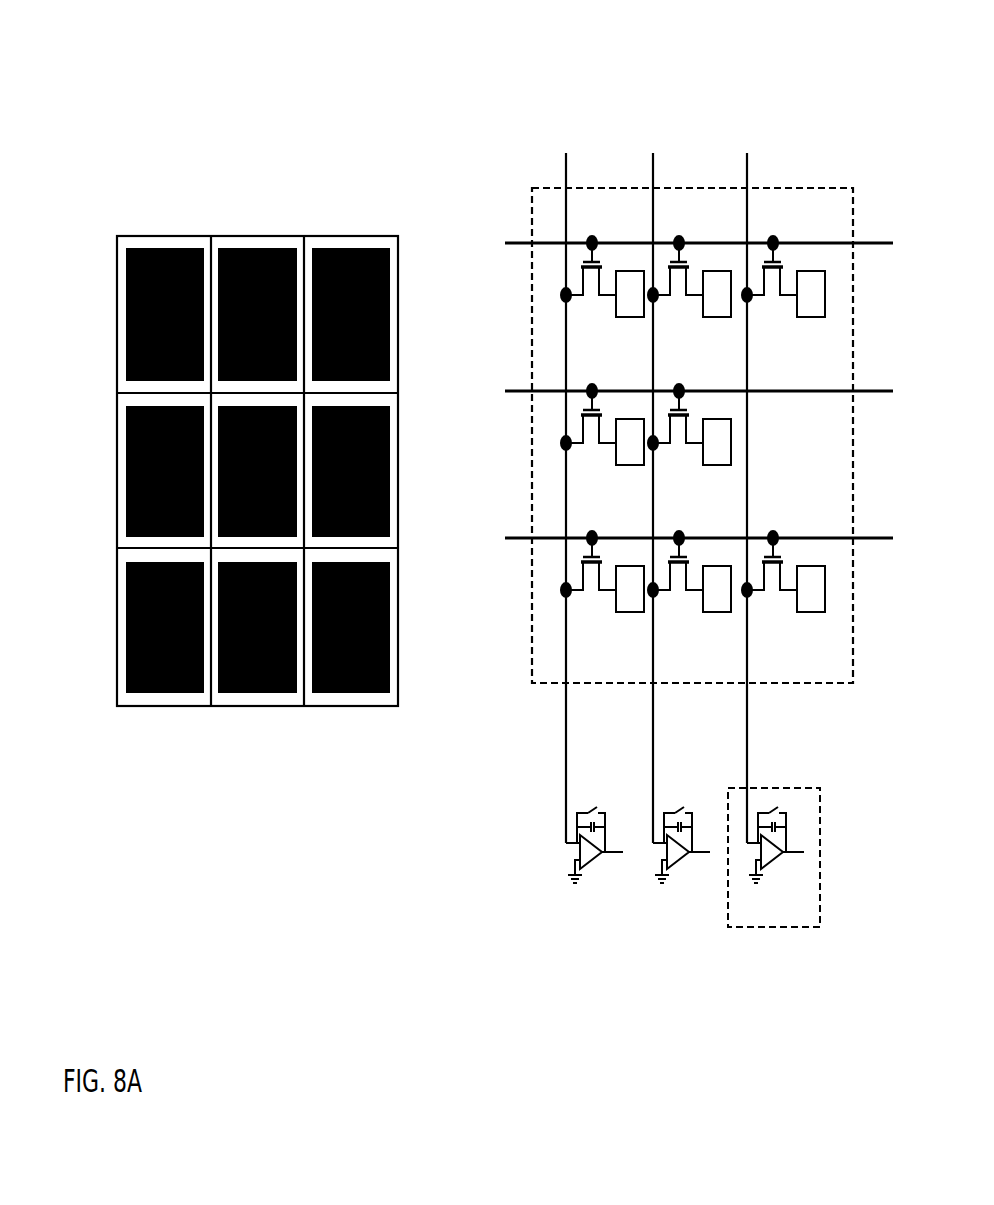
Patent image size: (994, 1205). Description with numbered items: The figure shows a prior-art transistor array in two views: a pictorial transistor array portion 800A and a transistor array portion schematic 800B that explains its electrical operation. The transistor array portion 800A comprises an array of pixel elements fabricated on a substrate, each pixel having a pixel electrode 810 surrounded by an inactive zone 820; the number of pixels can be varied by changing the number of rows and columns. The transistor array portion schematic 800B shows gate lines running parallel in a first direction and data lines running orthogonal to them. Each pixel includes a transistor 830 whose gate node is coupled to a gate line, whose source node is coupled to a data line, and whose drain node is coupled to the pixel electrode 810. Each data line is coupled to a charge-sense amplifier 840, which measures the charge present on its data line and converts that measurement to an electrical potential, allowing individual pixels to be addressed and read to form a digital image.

The transistor array portion 800A is at (108, 182).
The transistor array portion schematic 800B is at (515, 167).
The pixel electrode 810 is at (159, 670).
The inactive zone 820 is at (121, 589).
The transistor 830 is at (783, 577).
The charge-sense amplifier 840 is at (820, 890).